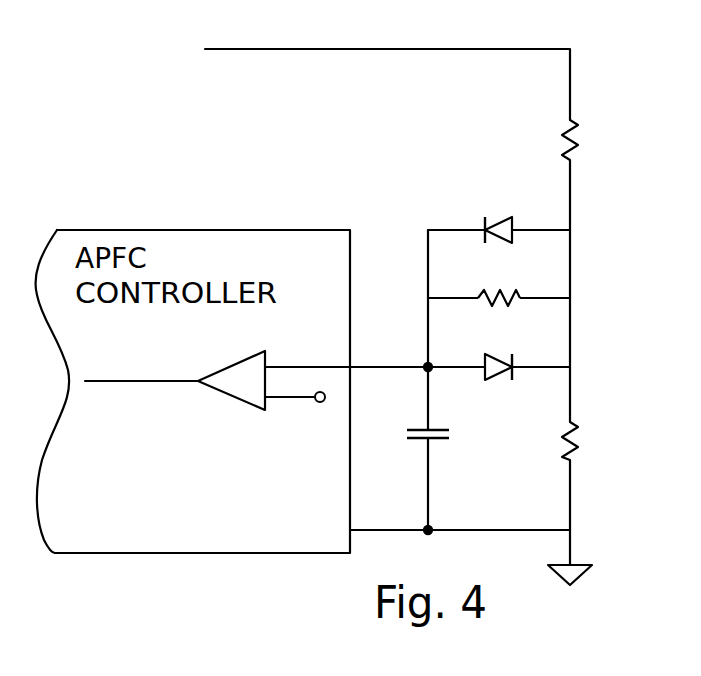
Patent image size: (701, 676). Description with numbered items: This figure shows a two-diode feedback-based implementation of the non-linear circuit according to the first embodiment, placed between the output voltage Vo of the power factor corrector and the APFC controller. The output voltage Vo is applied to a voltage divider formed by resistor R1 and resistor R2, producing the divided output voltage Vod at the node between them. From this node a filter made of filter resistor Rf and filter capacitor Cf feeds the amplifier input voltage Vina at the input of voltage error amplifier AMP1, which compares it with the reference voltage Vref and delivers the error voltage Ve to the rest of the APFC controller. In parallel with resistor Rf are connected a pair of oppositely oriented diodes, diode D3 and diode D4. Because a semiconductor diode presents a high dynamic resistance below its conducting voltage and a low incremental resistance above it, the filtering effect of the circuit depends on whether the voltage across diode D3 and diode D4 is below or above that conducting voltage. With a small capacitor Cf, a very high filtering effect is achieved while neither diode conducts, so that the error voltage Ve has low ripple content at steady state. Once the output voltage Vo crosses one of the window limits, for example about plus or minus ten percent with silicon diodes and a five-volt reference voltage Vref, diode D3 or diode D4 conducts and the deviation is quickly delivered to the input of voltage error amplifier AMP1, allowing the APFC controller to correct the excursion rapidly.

The voltage divider resistor R1 is at (546, 143).
The voltage divider resistor R2 is at (546, 441).
The filter resistor Rf is at (499, 277).
The diode D3 is at (499, 210).
The diode D4 is at (501, 347).
The filter capacitor Cf is at (413, 458).
The voltage error amplifier AMP1 is at (227, 398).
The output voltage Vo is at (552, 25).
The divided output voltage Vod is at (600, 311).
The amplifier input voltage Vina is at (382, 338).
The voltage error amplifier output Ve is at (135, 359).
The reference voltage Vref is at (306, 418).